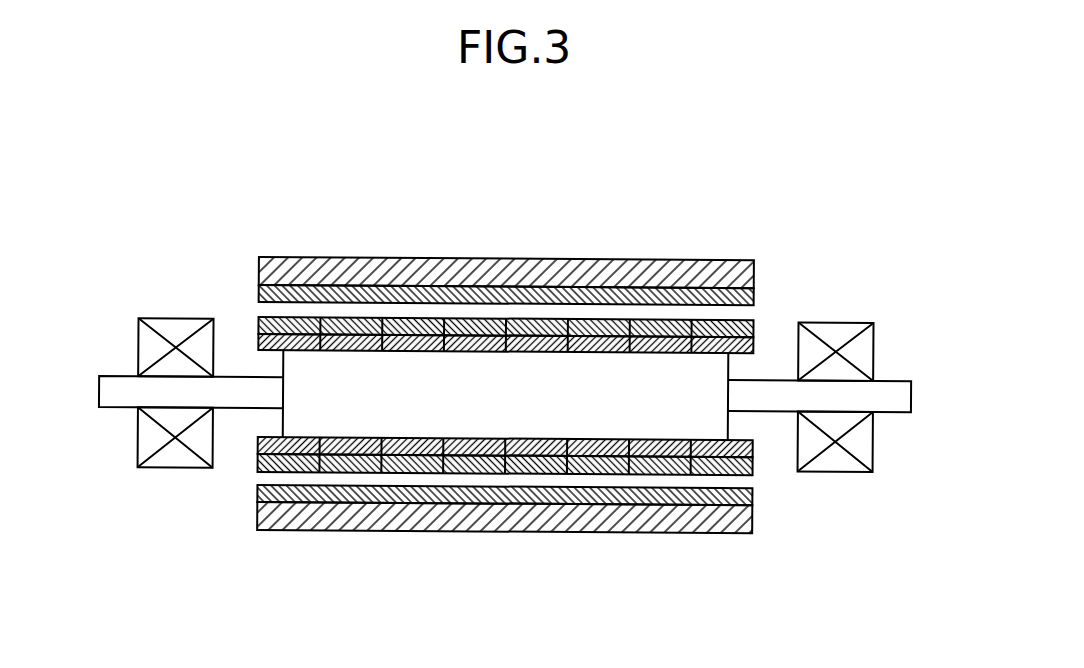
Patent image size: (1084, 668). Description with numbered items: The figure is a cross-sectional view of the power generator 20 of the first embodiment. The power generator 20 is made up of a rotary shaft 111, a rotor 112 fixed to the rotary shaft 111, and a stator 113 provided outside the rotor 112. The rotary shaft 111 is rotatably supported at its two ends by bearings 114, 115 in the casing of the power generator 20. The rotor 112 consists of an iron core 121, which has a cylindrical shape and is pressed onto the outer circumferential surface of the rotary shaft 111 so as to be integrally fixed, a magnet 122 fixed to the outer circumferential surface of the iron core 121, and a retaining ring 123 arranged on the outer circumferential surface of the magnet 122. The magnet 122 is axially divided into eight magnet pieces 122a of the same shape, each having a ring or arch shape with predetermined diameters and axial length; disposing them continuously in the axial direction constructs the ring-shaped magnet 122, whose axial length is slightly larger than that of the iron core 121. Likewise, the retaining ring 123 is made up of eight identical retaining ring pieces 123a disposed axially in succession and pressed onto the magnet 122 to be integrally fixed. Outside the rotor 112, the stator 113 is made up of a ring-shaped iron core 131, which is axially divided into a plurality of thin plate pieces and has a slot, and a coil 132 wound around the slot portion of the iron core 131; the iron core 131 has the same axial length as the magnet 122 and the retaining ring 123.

The power generator 20 is at (282, 148).
The rotary shaft 111 is at (893, 381).
The rotor 112 is at (757, 463).
The stator 113 is at (703, 253).
The bearing 114 is at (178, 325).
The bearing 115 is at (835, 327).
The iron core 121 is at (290, 422).
The magnet 122 is at (368, 326).
The magnet piece 122a is at (660, 338).
The retaining ring 123 is at (519, 323).
The retaining ring piece 123a is at (291, 325).
The iron core 131 is at (258, 513).
The coil 132 is at (258, 292).